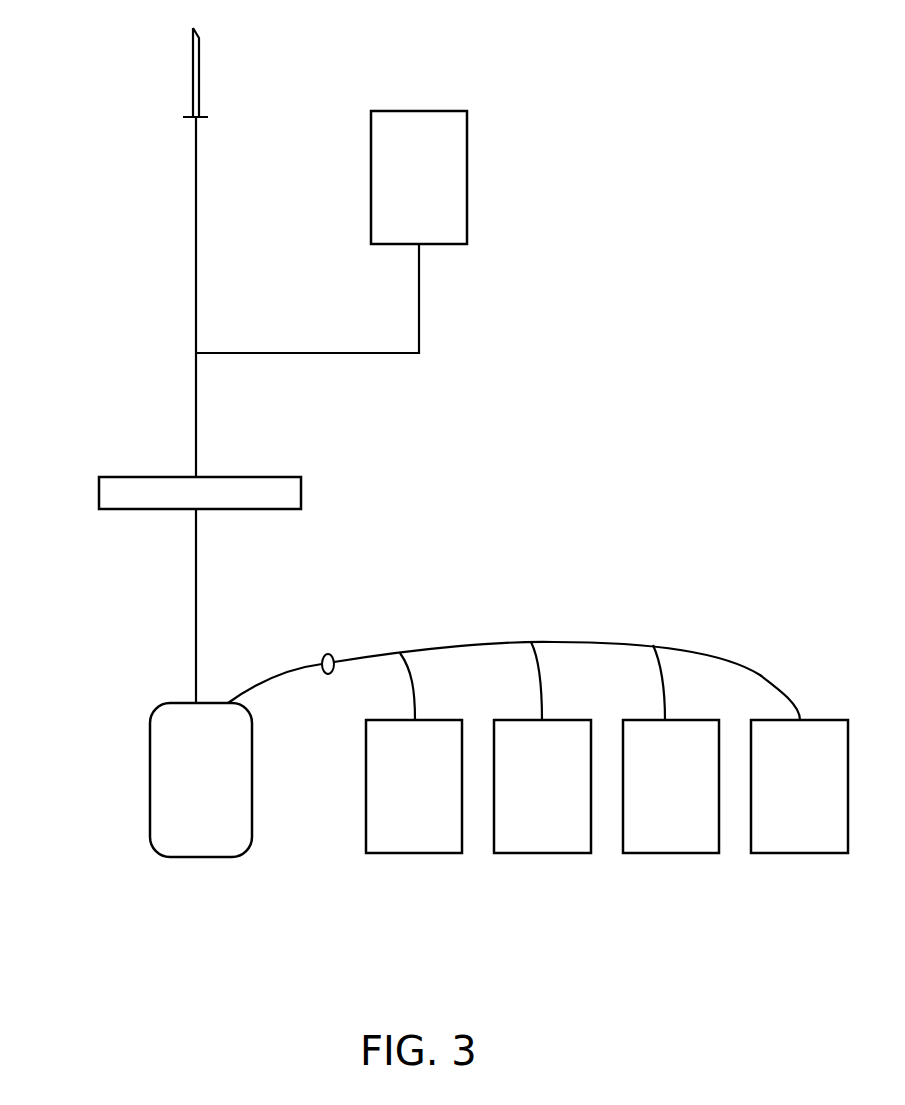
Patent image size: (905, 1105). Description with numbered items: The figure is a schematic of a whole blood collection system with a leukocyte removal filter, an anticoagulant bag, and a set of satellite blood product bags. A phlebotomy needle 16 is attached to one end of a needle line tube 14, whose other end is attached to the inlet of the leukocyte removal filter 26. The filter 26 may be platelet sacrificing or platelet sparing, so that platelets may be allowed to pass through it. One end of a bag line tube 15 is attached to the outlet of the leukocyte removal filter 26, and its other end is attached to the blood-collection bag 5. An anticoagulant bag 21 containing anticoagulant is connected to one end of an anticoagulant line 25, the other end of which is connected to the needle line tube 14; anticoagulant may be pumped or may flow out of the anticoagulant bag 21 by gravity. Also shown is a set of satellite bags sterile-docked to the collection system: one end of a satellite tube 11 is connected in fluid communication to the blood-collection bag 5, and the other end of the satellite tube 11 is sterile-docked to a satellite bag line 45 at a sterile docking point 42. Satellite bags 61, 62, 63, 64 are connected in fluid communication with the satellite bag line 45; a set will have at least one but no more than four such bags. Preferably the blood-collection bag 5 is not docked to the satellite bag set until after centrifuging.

The blood-collection bag 5 is at (175, 790).
The satellite tube 11 is at (307, 672).
The needle line tube 14 is at (196, 237).
The bag line tube 15 is at (196, 633).
The phlebotomy needle 16 is at (199, 78).
The anticoagulant bag 21 is at (420, 111).
The anticoagulant line 25 is at (420, 300).
The leukocyte removal filter 26 is at (99, 502).
The sterile docking point 42 is at (326, 654).
The satellite bag line 45 is at (560, 642).
The satellite bag 61 is at (411, 853).
The satellite bag 62 is at (541, 853).
The satellite bag 63 is at (674, 853).
The satellite bag 64 is at (802, 853).